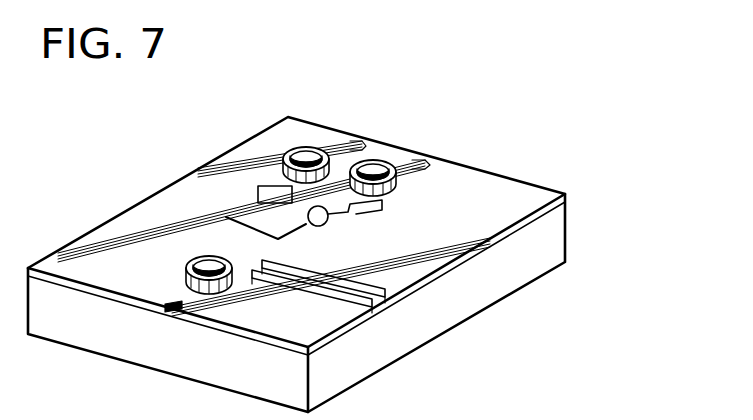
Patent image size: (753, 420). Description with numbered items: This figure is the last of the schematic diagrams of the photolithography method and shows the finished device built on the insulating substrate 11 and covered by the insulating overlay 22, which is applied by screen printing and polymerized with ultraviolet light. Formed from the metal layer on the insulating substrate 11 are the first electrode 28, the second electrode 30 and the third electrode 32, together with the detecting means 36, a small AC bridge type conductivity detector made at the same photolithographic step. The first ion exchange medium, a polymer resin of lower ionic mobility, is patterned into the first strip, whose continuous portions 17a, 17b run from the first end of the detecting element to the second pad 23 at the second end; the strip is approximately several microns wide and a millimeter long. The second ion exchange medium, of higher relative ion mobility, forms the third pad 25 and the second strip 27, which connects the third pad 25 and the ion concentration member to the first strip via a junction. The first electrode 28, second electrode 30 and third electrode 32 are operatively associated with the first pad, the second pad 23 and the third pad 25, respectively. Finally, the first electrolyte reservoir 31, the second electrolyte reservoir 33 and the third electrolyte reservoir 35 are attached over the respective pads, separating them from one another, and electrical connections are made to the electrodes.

The insulating substrate 11 is at (567, 237).
The insulating overlay 22 is at (517, 192).
The continuous portion of first strip 17a is at (262, 206).
The continuous portion of first strip 17b is at (258, 240).
The second pad 23 is at (237, 284).
The third pad 25 is at (372, 207).
The second strip 27 is at (331, 218).
The first electrode 28 is at (363, 142).
The second electrode 30 is at (166, 306).
The first electrolyte reservoir 31 is at (318, 146).
The third electrode 32 is at (430, 163).
The second electrolyte reservoir 33 is at (186, 270).
The third electrolyte reservoir 35 is at (382, 160).
The detecting means 36 is at (382, 287).